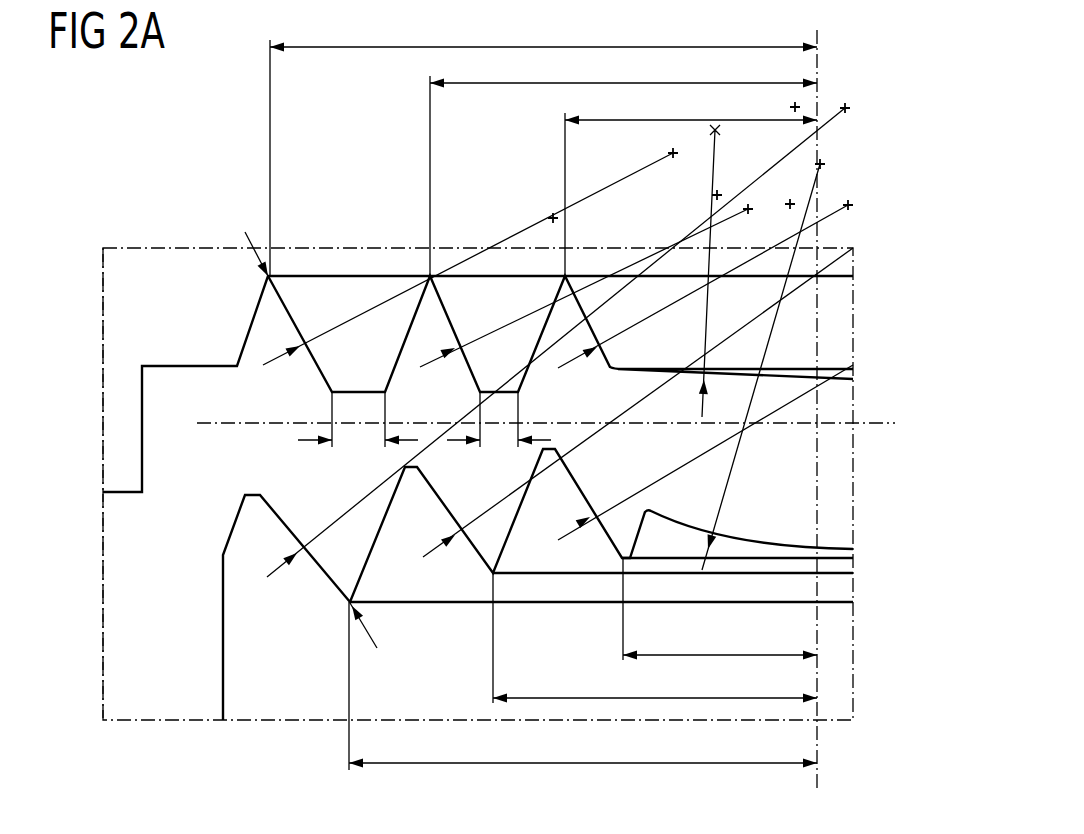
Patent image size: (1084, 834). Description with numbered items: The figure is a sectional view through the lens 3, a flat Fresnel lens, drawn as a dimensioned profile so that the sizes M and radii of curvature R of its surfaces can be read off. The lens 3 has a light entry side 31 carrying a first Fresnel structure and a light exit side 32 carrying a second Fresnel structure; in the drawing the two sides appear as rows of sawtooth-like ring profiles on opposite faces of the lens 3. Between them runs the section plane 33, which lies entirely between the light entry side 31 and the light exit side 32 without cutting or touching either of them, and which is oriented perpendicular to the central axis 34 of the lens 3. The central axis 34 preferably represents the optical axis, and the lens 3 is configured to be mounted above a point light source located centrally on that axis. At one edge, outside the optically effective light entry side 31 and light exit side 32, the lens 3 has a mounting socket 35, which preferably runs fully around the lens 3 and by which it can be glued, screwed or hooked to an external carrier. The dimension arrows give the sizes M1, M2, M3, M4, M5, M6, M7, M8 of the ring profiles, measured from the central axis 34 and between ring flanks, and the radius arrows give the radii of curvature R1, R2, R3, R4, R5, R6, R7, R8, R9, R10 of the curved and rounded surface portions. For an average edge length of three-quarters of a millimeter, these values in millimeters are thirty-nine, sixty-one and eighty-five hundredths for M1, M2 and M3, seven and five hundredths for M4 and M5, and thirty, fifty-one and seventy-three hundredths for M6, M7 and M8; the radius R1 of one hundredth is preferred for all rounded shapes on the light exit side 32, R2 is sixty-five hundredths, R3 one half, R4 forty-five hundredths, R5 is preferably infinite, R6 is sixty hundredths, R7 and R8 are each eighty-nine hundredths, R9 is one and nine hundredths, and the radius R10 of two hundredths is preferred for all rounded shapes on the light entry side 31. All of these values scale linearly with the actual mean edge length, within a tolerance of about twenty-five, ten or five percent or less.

The lens 3 is at (895, 215).
The light entry side 31 is at (862, 445).
The light exit side 32 is at (862, 274).
The section plane 33 is at (895, 421).
The central axis 34 is at (820, 150).
The mounting socket 35 is at (103, 598).
The size M1 is at (691, 182).
The size M2 is at (623, 164).
The size M3 is at (543, 146).
The size M4 is at (358, 426).
The size M5 is at (500, 447).
The size M6 is at (720, 609).
The size M7 is at (655, 638).
The size M8 is at (583, 686).
The radius of curvature R1 is at (257, 255).
The radius of curvature R2 is at (268, 368).
The radius of curvature R3 is at (423, 369).
The radius of curvature R4 is at (562, 370).
The radius of curvature R5 is at (702, 416).
The radius of curvature R6 is at (703, 569).
The radius of curvature R7 is at (560, 539).
The radius of curvature R8 is at (425, 556).
The radius of curvature R9 is at (269, 578).
The radius of curvature R10 is at (378, 644).